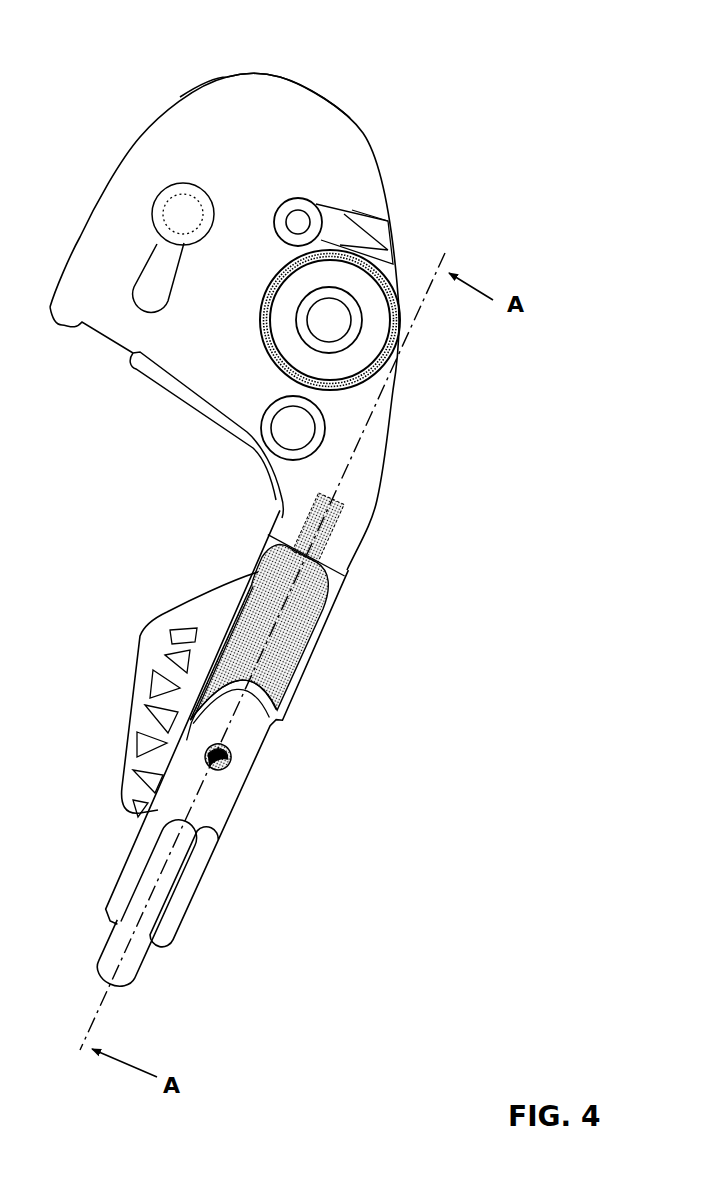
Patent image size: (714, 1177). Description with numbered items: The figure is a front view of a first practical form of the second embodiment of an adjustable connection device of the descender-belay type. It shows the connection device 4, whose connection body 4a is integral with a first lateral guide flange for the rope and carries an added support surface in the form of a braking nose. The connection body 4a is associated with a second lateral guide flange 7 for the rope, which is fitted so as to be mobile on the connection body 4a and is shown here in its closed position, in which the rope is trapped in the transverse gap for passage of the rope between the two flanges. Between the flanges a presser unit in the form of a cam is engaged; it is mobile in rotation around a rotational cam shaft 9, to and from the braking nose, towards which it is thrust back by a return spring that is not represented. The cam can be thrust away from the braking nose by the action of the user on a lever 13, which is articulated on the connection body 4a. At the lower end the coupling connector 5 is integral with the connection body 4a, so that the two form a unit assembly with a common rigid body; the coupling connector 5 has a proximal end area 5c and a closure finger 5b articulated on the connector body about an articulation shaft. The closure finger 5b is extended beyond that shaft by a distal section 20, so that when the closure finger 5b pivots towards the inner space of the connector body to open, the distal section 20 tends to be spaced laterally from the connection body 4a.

The connection device 4 is at (396, 147).
The connection body 4a is at (178, 390).
The coupling connector 5 is at (195, 929).
The closure finger 5b is at (279, 668).
The proximal end area 5c is at (120, 982).
The second lateral guide flange 7 is at (232, 100).
The rotational cam shaft 9 is at (347, 330).
The lever 13 is at (157, 651).
The distal section 20 is at (333, 517).